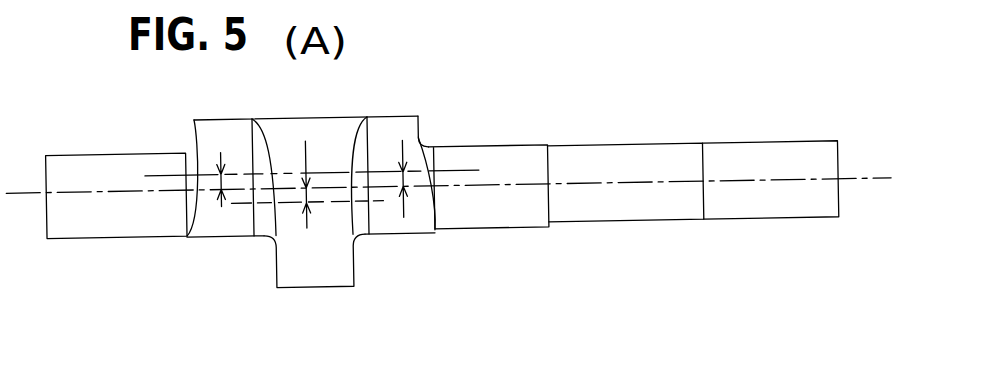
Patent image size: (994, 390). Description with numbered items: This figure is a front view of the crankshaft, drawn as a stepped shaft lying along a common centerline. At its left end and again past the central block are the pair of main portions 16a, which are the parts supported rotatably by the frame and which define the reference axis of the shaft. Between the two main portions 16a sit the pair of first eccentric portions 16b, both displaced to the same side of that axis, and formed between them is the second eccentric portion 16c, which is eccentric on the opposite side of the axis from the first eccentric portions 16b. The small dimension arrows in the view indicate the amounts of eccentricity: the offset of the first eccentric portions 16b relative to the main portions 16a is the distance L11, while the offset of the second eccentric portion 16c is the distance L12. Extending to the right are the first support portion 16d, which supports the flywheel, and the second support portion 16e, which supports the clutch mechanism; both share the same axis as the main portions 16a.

The main portions 16a is at (128, 224).
The first eccentric portions 16b is at (220, 223).
The second eccentric portion 16c is at (313, 272).
The first support portion 16d is at (625, 220).
The second support portion 16e is at (747, 220).
The amount of eccentricity of the first eccentric portions L11 is at (400, 178).
The amount of eccentricity of the second eccentric portion L12 is at (305, 192).